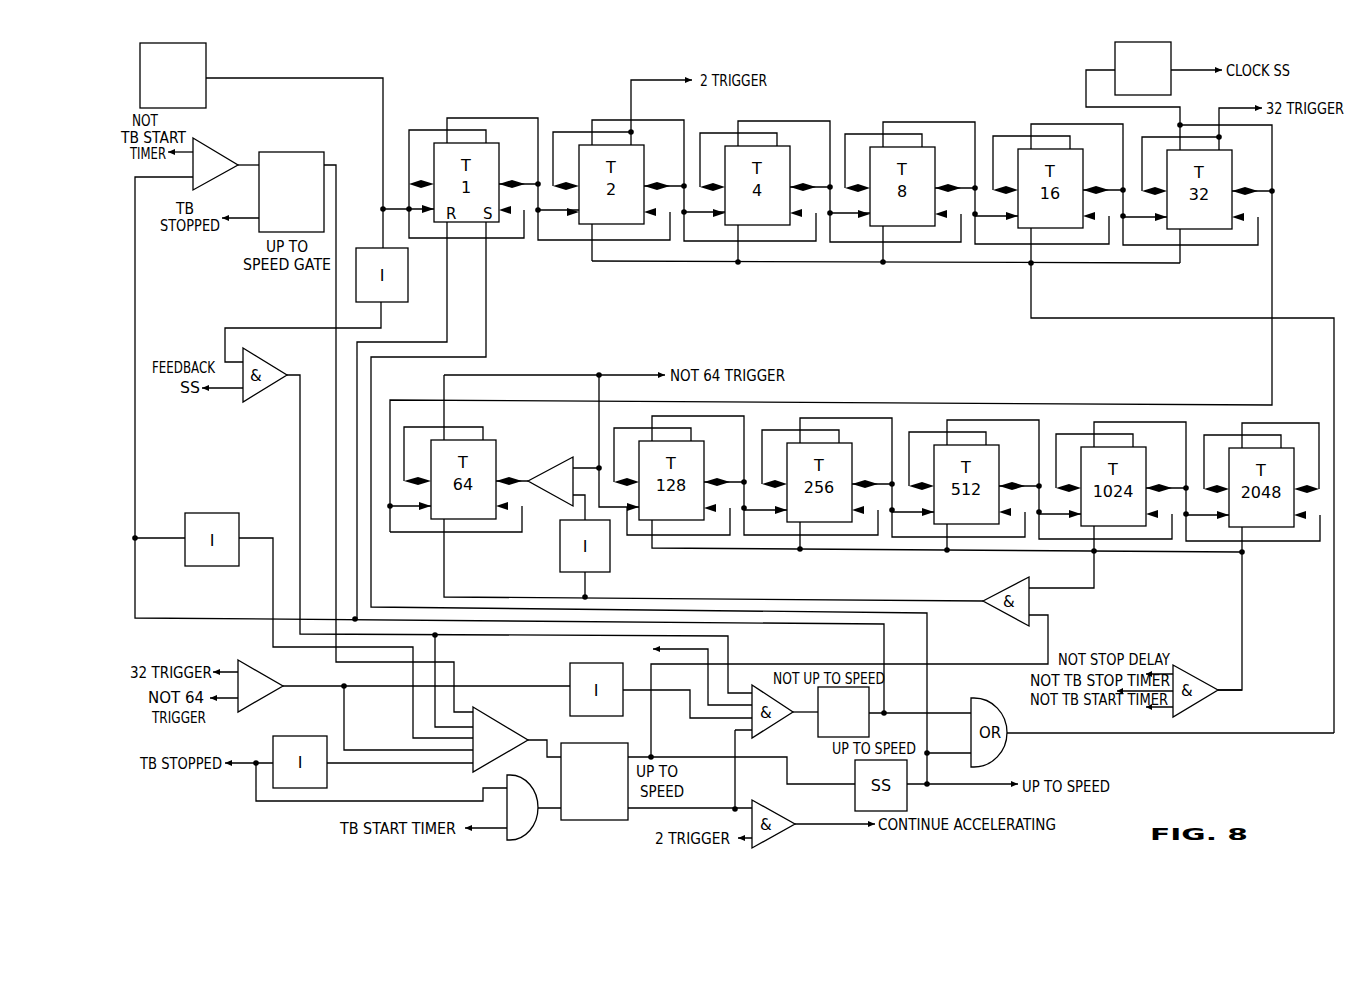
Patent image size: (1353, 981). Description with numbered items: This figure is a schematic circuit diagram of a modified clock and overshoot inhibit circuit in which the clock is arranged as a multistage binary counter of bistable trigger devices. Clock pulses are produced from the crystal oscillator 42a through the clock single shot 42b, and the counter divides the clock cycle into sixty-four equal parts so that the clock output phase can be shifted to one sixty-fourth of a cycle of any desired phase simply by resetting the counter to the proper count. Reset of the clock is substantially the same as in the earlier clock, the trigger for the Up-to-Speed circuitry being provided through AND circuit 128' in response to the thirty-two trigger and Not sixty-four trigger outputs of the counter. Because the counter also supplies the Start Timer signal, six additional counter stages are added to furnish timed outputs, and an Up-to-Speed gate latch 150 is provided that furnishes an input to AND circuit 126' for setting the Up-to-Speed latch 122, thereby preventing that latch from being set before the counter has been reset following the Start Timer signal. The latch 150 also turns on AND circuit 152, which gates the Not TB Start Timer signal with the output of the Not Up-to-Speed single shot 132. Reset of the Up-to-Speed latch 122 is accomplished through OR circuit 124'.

The crystal oscillator 42a is at (208, 68).
The clock single shot 42b is at (1171, 90).
The Up-to-Speed gate latch 150 is at (325, 160).
The AND circuit 152 is at (215, 148).
The Up-to-Speed latch 122 is at (598, 742).
The OR circuit 124' is at (542, 813).
The AND circuit 126' is at (506, 737).
The AND circuit 128' is at (273, 684).
The Not Up-to-Speed single shot 132 is at (869, 724).